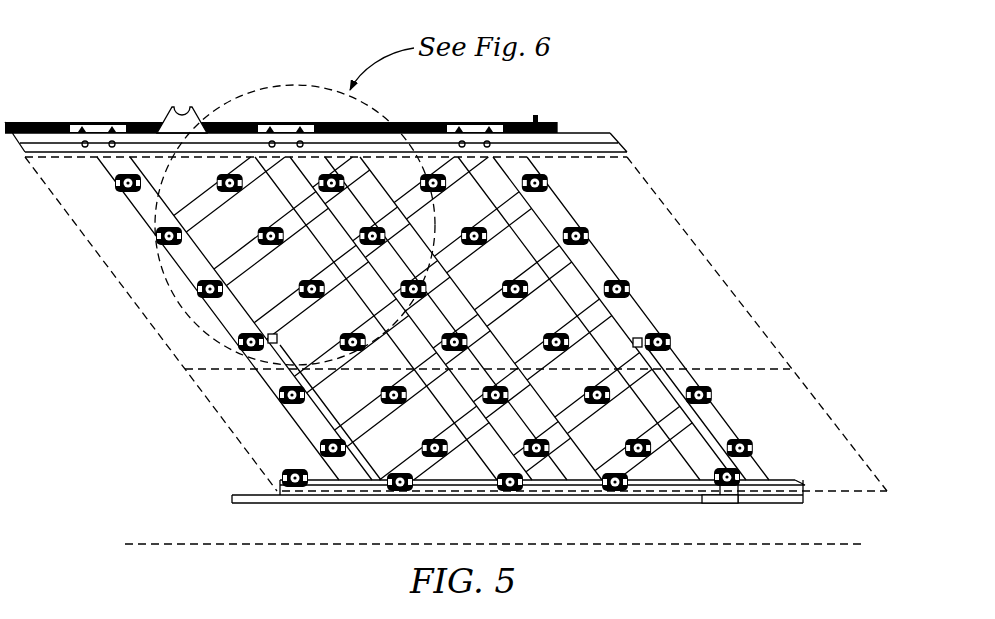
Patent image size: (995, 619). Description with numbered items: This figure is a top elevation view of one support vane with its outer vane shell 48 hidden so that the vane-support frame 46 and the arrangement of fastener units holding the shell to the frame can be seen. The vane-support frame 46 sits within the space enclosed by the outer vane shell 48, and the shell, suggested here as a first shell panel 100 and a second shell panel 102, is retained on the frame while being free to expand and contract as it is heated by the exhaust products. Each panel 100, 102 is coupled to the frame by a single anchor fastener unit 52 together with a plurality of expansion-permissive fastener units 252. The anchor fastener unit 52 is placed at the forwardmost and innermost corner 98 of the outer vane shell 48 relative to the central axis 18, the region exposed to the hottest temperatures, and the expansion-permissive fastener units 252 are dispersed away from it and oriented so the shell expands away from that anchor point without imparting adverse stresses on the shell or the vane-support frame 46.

The central axis 18 is at (160, 544).
The vane-support frame 46 is at (560, 207).
The outer vane shell 48 is at (690, 218).
The anchor fastener unit 52 is at (236, 350).
The forwardmost and innermost corner 98 is at (276, 455).
The first shell panel 100 is at (822, 408).
The second shell panel 102 is at (735, 296).
The expansion-permissive fastener unit 252 is at (295, 293).